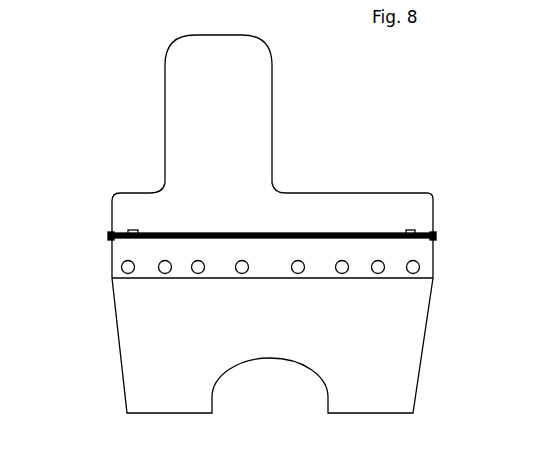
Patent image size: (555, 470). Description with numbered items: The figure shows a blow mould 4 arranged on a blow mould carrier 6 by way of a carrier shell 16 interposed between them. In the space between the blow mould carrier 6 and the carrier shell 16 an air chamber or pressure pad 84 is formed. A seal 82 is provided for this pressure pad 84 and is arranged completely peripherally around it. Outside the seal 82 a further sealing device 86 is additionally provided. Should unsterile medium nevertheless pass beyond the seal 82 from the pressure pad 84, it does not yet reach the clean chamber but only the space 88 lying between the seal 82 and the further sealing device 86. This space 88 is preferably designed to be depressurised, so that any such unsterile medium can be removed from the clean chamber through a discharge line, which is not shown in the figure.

The blow mould 4 is at (140, 317).
The blow mould carrier 6 is at (148, 196).
The carrier shell 16 is at (147, 245).
The seal 82 is at (424, 236).
The pressure pad 84 is at (337, 237).
The further sealing device 86 is at (108, 235).
The space 88 is at (110, 232).